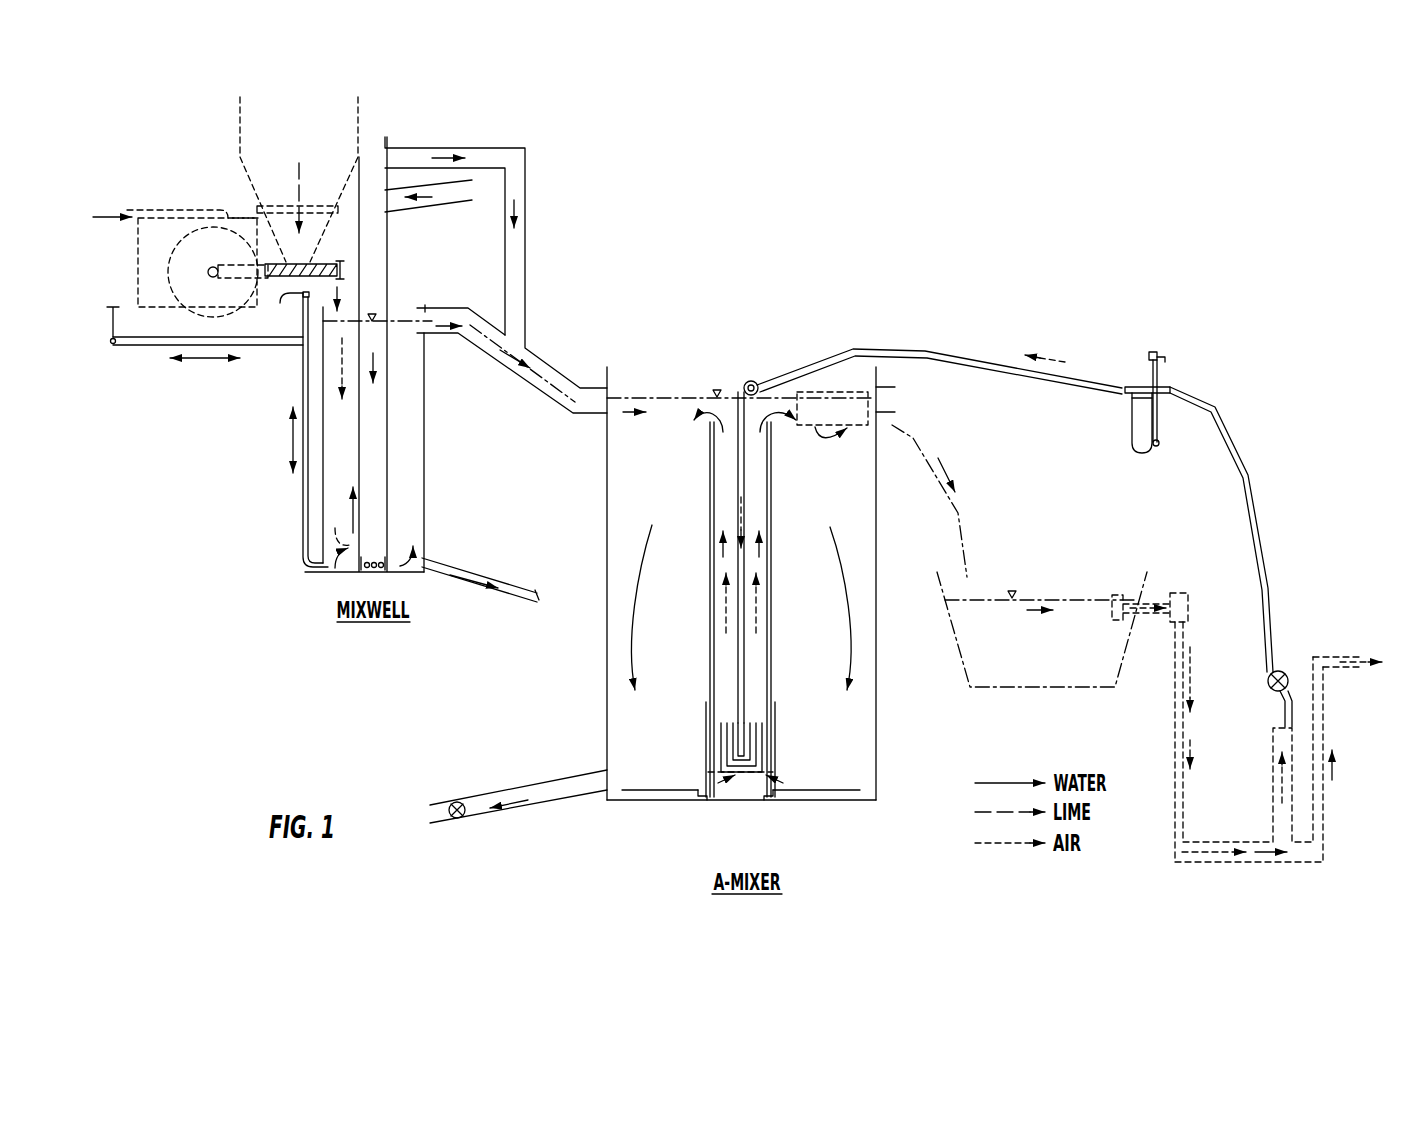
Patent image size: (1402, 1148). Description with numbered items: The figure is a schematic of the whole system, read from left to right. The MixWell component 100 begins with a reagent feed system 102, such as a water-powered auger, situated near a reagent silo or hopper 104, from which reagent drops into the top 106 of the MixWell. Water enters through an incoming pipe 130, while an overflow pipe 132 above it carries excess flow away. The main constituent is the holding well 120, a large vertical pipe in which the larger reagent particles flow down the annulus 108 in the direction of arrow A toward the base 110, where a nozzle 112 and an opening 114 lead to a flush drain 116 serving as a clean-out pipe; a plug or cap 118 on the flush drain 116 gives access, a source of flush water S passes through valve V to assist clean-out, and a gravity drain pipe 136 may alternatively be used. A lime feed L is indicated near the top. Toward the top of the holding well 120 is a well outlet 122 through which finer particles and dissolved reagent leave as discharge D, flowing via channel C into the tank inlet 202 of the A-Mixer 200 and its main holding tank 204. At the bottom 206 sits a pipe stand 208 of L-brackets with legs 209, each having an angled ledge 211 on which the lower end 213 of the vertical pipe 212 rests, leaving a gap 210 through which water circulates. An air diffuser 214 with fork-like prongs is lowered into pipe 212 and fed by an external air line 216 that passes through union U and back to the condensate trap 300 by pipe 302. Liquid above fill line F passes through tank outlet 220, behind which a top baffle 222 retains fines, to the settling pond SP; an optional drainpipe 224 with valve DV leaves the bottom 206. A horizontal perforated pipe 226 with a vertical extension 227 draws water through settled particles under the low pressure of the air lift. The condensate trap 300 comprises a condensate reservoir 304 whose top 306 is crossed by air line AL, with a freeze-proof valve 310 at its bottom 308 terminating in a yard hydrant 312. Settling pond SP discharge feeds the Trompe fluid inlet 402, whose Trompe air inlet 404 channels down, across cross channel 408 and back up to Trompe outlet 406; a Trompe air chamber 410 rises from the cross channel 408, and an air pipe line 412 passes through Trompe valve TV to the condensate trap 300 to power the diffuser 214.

The MixWell component 100 is at (280, 512).
The reagent feed system 102 is at (153, 272).
The reagent silo or hopper 104 is at (270, 168).
The top of MixWell 106 is at (403, 298).
The annulus 108 is at (328, 390).
The base 110 is at (343, 580).
The nozzle 112 is at (373, 563).
The opening 114 is at (328, 572).
The flush drain 116 is at (303, 487).
The plug or cap 118 is at (285, 313).
The holding well 120 is at (424, 475).
The well outlet 122 is at (435, 335).
The incoming pipe 130 is at (430, 197).
The overflow pipe 132 is at (470, 147).
The gravity drain pipe 136 is at (450, 578).
The A-Mixer 200 is at (532, 713).
The tank inlet 202 is at (607, 415).
The main holding tank 204 is at (607, 582).
The bottom of holding tank 206 is at (612, 808).
The pipe stand 208 is at (770, 688).
The legs 209 is at (700, 802).
The aperture or gap 210 is at (708, 777).
The angled ledge 211 is at (708, 767).
The vertical tube, channel or pipe 212 is at (710, 650).
The lower end of pipe 213 is at (743, 787).
The air diffuser 214 is at (743, 660).
The external air line 216 is at (810, 365).
The tank outlet 220 is at (895, 402).
The top baffle 222 is at (840, 392).
The drainpipe 224 is at (510, 812).
The perforated pipe 226 is at (857, 788).
The vertical extension 227 is at (750, 787).
The condensate trap 300 is at (1113, 433).
The pipe 302 is at (1170, 378).
The condensate reservoir 304 is at (1140, 408).
The top of reservoir 306 is at (1140, 385).
The bottom of reservoir 308 is at (1155, 438).
The freeze-proof valve 310 is at (1160, 444).
The yard hydrant 312 is at (1163, 360).
The fluid inlet 402 is at (1120, 595).
The Trompe air inlet 404 is at (1180, 589).
The Trompe outlet 406 is at (1338, 667).
The cross channel 408 is at (1248, 842).
The Trompe air chamber 410 is at (1273, 785).
The air pipe line 412 is at (1280, 705).
The source of flush water S is at (108, 340).
The valve V is at (116, 346).
The arrow A is at (342, 357).
The lime L is at (338, 321).
The discharge D is at (512, 362).
The channel C is at (547, 397).
The fill line F is at (675, 402).
The union U is at (746, 383).
The valve DV is at (457, 800).
The Trompe valve TV is at (1268, 683).
The air line AL is at (1173, 390).
The settling pond SP is at (1037, 672).